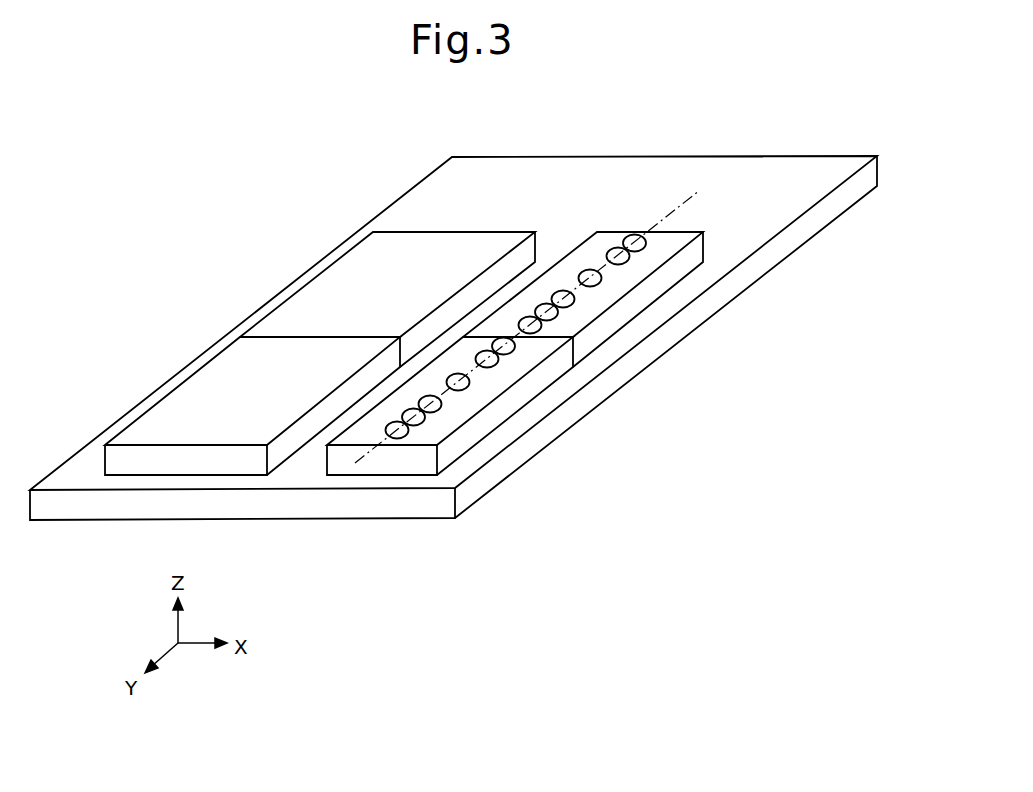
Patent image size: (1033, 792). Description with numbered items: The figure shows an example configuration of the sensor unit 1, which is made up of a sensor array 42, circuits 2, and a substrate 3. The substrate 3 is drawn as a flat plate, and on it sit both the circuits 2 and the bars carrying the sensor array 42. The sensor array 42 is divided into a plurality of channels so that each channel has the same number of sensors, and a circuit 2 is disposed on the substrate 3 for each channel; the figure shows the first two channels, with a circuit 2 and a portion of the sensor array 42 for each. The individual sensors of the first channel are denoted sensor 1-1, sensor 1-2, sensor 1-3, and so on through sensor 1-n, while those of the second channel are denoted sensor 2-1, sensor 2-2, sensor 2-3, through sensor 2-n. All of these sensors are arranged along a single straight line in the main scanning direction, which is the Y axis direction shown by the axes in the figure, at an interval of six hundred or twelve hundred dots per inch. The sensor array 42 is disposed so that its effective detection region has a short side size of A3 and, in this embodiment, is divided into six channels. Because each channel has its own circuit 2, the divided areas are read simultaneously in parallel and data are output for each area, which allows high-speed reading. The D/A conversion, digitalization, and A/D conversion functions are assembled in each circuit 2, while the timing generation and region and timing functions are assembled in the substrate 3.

The sensor unit 1 is at (704, 115).
The circuit 2 is at (328, 283).
The substrate 3 is at (132, 508).
The sensor array 42 is at (395, 460).
The sensor 1-1 is at (407, 430).
The sensor 1-2 is at (402, 417).
The sensor 1-3 is at (437, 401).
The sensor 1-n is at (494, 343).
The sensor 2-1 is at (545, 330).
The sensor 2-2 is at (533, 317).
The sensor 2-3 is at (572, 303).
The sensor 2-n is at (623, 237).